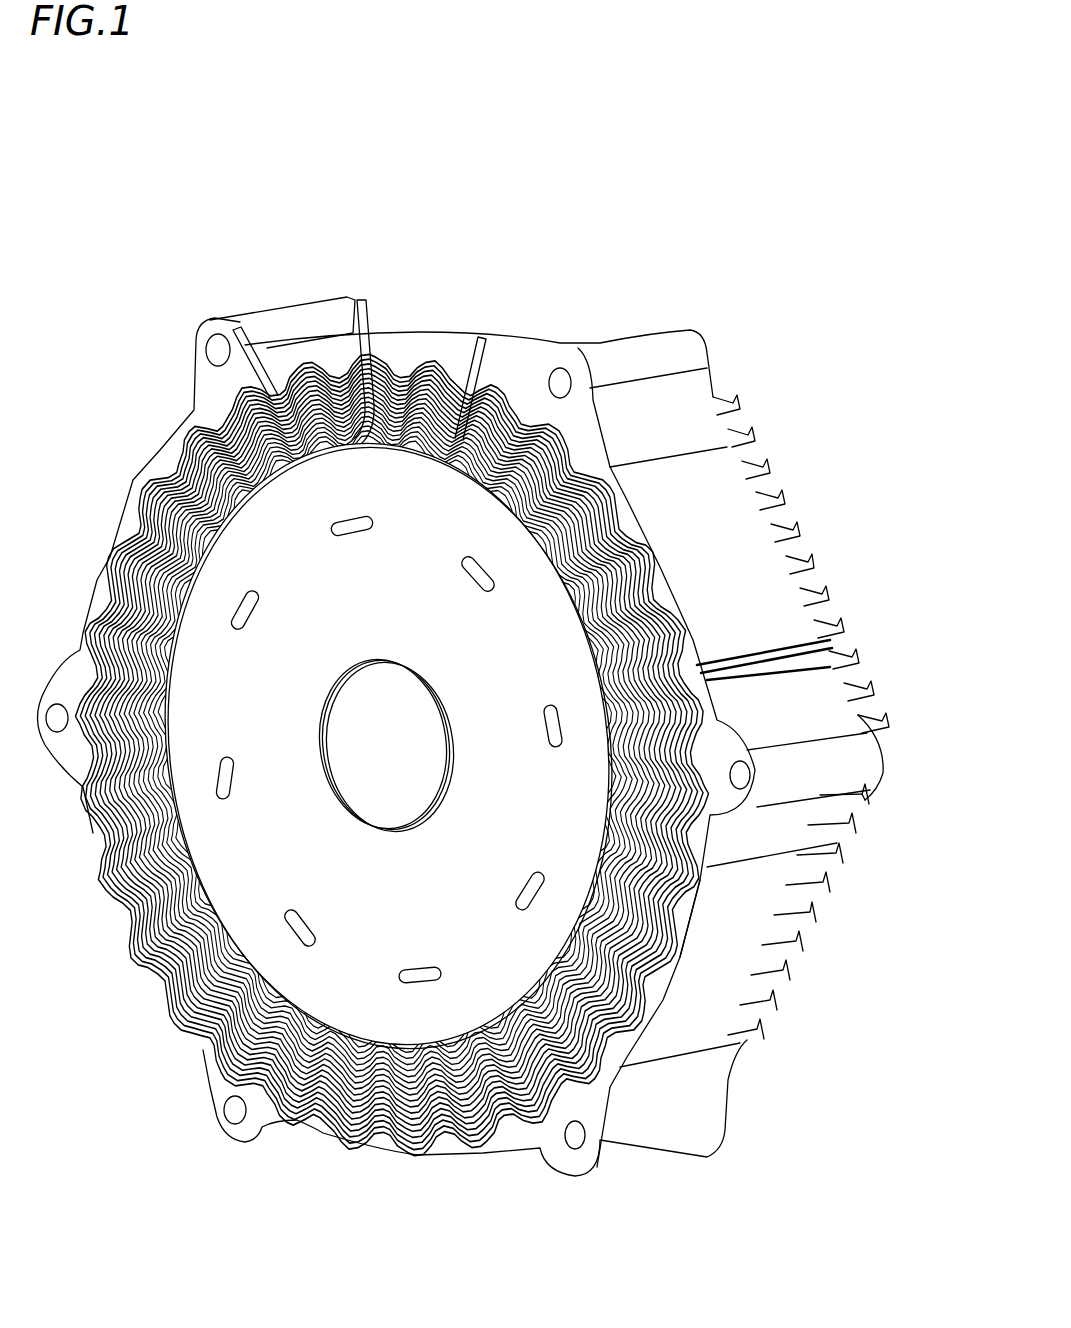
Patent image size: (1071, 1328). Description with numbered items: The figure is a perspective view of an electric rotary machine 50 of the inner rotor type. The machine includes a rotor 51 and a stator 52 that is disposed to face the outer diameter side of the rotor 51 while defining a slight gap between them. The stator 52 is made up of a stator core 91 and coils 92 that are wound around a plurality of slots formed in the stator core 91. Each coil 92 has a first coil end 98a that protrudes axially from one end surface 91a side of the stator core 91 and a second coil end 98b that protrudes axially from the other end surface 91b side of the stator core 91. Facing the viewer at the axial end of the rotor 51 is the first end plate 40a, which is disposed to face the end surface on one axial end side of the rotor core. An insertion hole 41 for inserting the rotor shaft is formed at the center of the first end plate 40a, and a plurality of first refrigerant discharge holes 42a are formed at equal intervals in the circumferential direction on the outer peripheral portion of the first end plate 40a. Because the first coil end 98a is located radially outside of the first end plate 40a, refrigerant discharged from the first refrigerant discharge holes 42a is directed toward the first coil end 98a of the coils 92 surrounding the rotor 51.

The electric rotary machine 50 is at (614, 142).
The stator 52 is at (568, 317).
The stator core 91 is at (737, 503).
The first coil end 98a is at (668, 600).
The second coil end 98b is at (845, 558).
The other end surface 91b is at (883, 773).
The one end surface 91a is at (703, 817).
The coil 92 is at (132, 511).
The rotor 51 is at (273, 887).
The first end plate 40a is at (440, 1017).
The insertion hole 41 is at (358, 690).
The first refrigerant discharge holes 42a is at (257, 603).